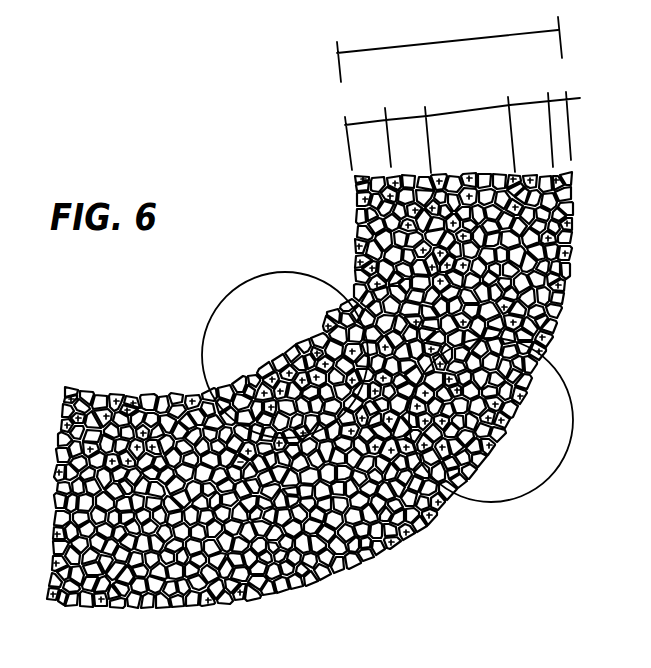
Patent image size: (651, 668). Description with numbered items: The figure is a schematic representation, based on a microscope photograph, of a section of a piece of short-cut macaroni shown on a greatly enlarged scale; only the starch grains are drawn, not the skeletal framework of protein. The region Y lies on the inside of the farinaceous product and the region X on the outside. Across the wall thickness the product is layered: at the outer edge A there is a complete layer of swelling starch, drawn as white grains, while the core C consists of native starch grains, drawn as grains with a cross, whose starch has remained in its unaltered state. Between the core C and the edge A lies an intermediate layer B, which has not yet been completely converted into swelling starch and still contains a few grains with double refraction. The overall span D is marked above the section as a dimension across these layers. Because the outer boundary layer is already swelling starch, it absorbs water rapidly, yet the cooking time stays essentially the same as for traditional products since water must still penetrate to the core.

The outer edge A is at (462, 120).
The intermediate layer B is at (468, 124).
The core C is at (468, 98).
The overall length of the bend D is at (449, 49).
The region on the outside X is at (491, 420).
The region on the inside Y is at (285, 355).